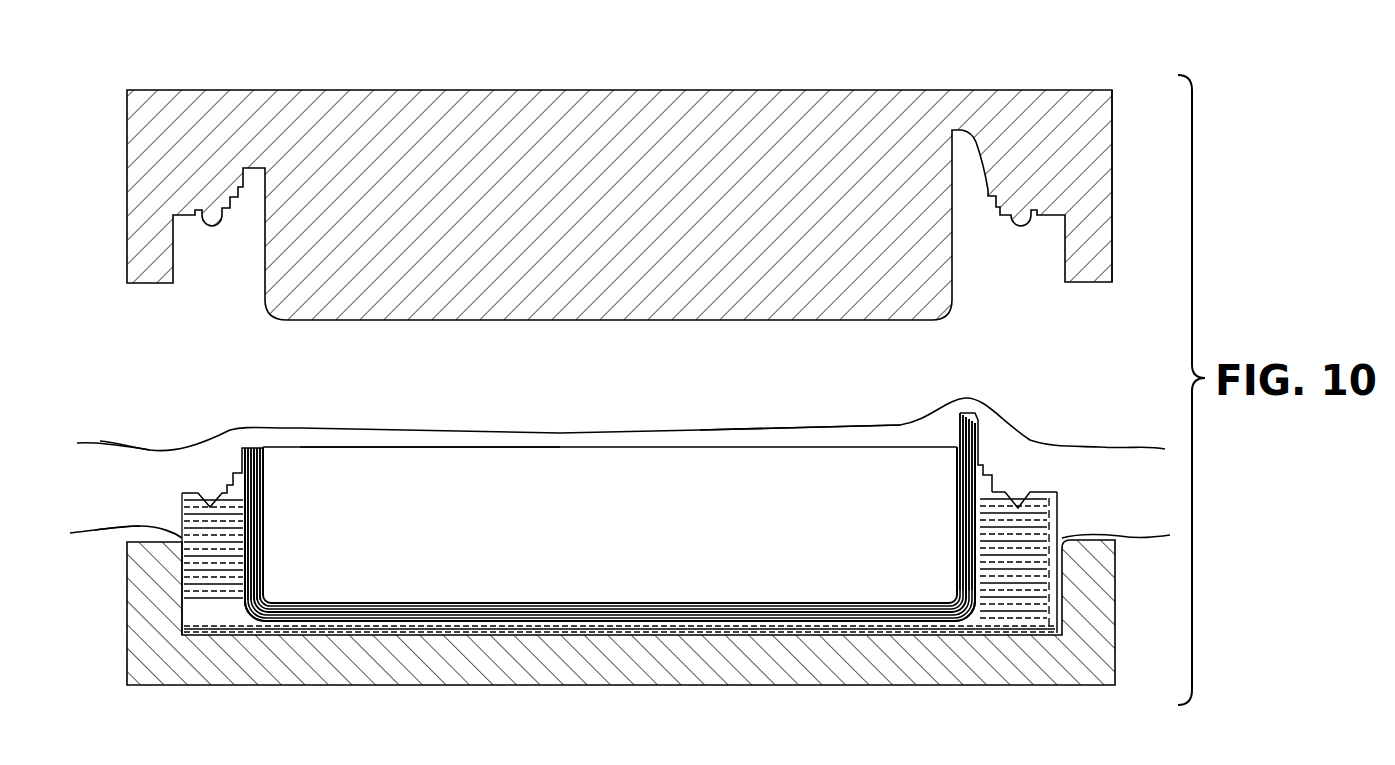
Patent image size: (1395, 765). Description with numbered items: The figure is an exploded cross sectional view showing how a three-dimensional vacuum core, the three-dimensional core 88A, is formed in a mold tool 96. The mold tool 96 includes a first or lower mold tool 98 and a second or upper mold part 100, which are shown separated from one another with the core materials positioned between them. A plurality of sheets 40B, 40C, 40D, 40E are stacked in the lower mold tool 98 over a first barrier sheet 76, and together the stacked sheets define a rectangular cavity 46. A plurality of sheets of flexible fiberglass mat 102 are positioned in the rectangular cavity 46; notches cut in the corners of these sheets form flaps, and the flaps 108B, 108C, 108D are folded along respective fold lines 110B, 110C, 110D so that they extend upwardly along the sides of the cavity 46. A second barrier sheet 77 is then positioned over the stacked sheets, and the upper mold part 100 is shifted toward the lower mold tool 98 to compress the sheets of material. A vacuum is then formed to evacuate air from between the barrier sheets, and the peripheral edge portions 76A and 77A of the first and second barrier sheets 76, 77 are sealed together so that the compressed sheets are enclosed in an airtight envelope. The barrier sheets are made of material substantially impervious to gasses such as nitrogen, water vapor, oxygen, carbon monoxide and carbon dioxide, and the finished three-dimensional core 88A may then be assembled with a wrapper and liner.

The mold tool 96 is at (1030, 88).
The second or upper mold part 100 is at (1113, 125).
The first or lower mold tool 98 is at (1115, 645).
The second barrier sheet 77 is at (147, 450).
The peripheral edge portion of second barrier sheet 77A is at (124, 447).
The first barrier sheet 76 is at (132, 525).
The peripheral edge portion of first barrier sheet 76A is at (113, 532).
The flap 108B is at (265, 497).
The flap 108C is at (418, 470).
The flap 108D is at (958, 460).
The sheets of flexible fiberglass mat 102 is at (432, 598).
The rectangular cavity 46 is at (650, 533).
The 3D core 88A is at (787, 440).
The fold line 110B is at (283, 594).
The fold line 110C is at (700, 600).
The fold line 110D is at (935, 598).
The sheet 40B is at (1060, 522).
The sheet 40C is at (1042, 492).
The sheet 40D is at (1000, 490).
The sheet 40E is at (978, 402).